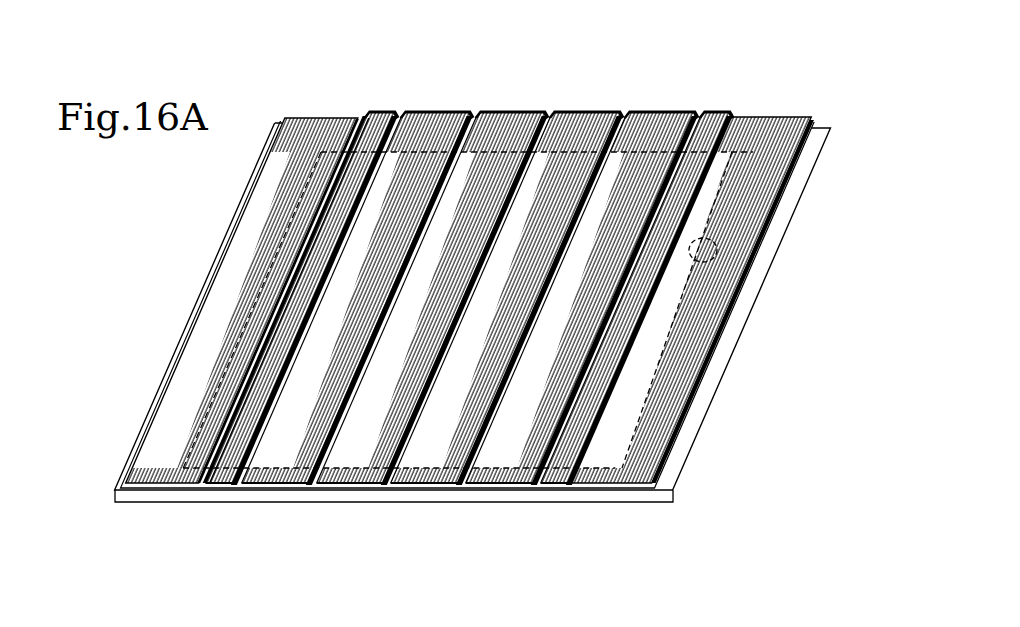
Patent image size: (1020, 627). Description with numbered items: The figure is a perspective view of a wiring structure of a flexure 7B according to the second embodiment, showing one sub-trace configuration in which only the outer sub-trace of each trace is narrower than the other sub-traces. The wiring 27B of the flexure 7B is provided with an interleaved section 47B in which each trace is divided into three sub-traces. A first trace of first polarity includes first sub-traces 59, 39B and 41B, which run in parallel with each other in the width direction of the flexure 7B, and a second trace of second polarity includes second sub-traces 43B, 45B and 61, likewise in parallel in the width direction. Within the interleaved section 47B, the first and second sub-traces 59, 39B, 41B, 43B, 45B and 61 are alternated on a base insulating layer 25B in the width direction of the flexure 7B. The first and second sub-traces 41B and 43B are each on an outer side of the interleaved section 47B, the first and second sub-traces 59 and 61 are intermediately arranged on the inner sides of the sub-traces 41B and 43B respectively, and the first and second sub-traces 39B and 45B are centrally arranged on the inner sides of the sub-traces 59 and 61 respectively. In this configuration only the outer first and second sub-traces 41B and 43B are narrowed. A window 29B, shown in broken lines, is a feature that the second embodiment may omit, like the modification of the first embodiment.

The flexure 7B is at (766, 85).
The base insulating layer 25B is at (658, 500).
The wiring 27B is at (563, 93).
The window 29B is at (716, 258).
The first sub-trace 39B is at (427, 488).
The first sub-trace 41B is at (555, 488).
The second sub-trace 43B is at (215, 490).
The second sub-trace 45B is at (353, 488).
The interleaved section 47B is at (269, 373).
The first sub-trace 59 is at (285, 488).
The second sub-trace 61 is at (485, 488).